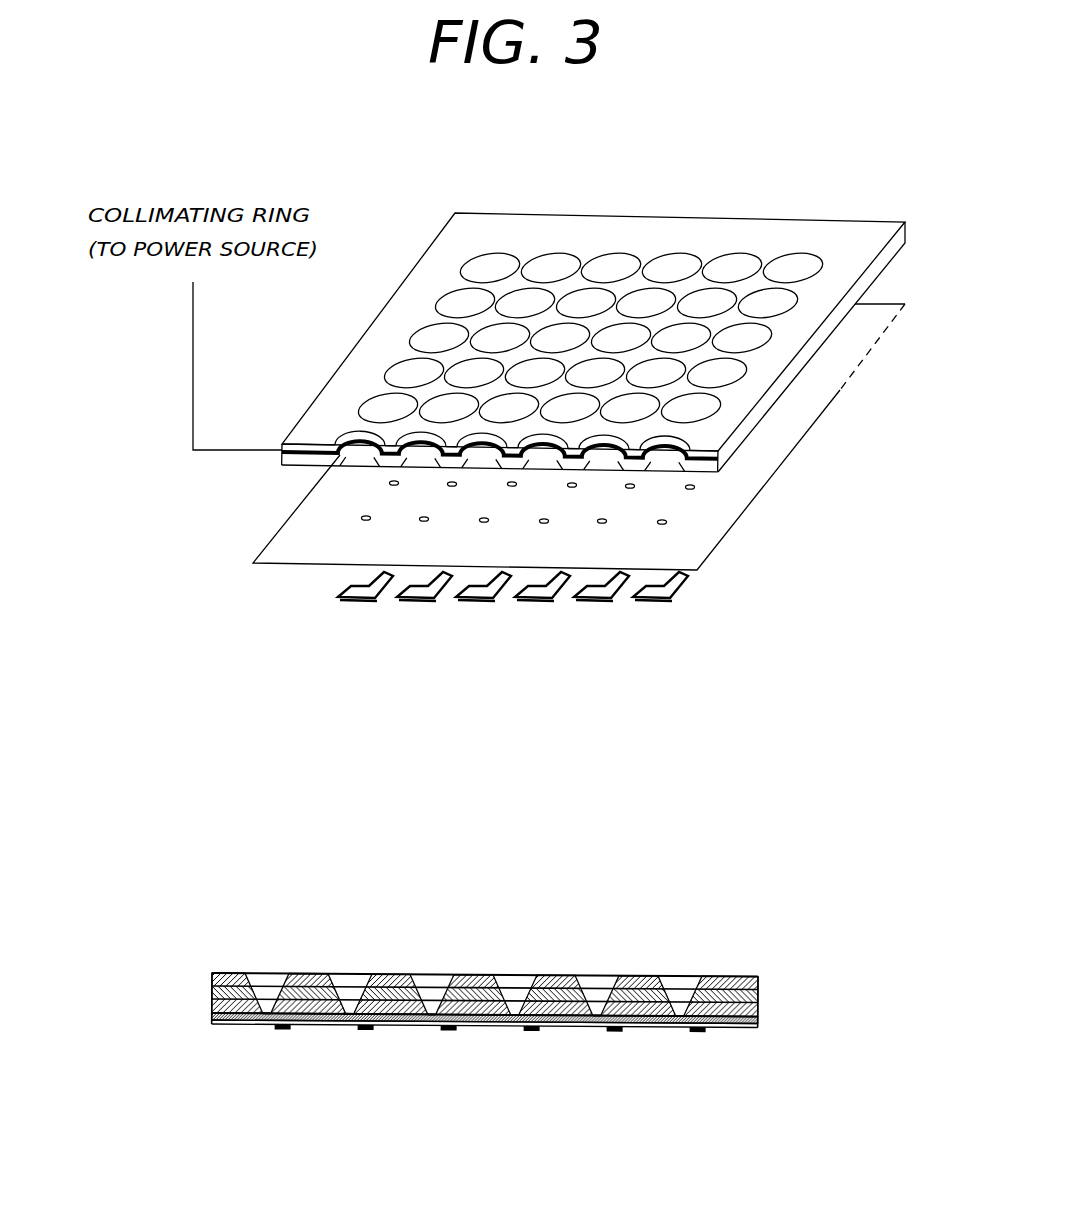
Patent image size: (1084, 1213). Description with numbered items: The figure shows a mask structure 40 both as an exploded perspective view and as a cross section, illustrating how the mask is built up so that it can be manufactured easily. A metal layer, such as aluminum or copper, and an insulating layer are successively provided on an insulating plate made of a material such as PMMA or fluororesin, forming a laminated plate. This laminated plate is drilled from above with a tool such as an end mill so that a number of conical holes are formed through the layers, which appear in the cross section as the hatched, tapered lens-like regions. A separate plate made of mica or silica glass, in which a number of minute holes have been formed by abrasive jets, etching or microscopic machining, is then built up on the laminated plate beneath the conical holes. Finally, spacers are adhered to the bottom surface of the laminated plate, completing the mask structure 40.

The light-emitting panel (optical sheet assembly) 40 is at (424, 222).